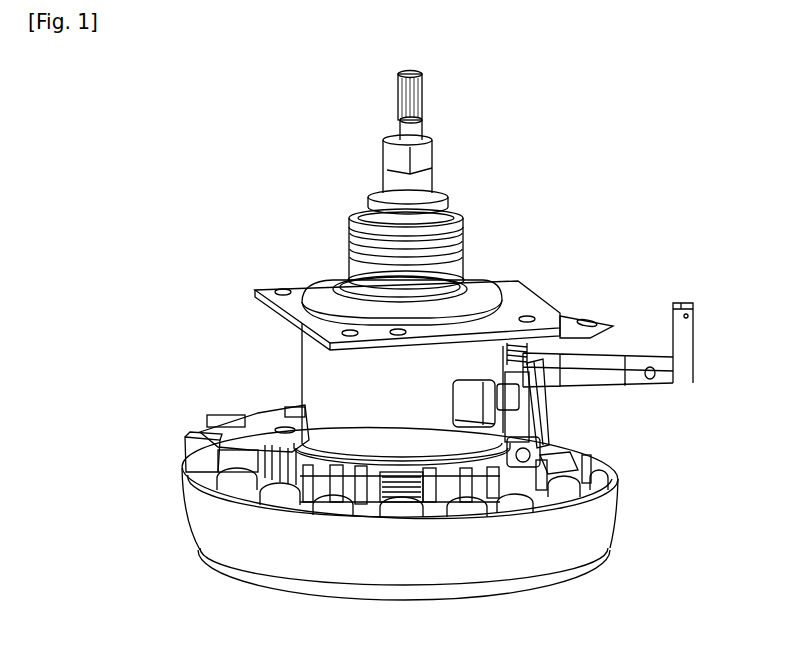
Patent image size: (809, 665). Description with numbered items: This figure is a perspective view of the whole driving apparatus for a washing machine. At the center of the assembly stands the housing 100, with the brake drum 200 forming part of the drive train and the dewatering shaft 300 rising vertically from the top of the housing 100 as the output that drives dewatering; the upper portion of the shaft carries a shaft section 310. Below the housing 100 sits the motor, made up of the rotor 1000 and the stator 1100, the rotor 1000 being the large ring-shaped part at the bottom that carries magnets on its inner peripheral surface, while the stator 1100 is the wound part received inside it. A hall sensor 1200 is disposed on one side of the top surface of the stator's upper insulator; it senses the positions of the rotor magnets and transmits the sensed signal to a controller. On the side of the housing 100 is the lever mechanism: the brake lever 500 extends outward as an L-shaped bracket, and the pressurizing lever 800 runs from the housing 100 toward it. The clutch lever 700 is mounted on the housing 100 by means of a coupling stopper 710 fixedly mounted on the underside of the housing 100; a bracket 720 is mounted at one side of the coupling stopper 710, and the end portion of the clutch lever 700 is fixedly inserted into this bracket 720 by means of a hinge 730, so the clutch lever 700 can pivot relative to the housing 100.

The housing 100 is at (310, 376).
The brake drum 200 is at (471, 392).
The dewatering shaft 300 is at (376, 156).
The shaft collar 310 is at (426, 183).
The brake lever 500 is at (674, 375).
The clutch lever 700 is at (545, 410).
The coupling stopper 710 is at (397, 465).
The bracket 720 is at (510, 468).
The hinge 730 is at (546, 452).
The pressurizing lever 800 is at (565, 387).
The rotor 1000 is at (180, 522).
The stator 1100 is at (282, 502).
The hall sensor 1200 is at (174, 431).